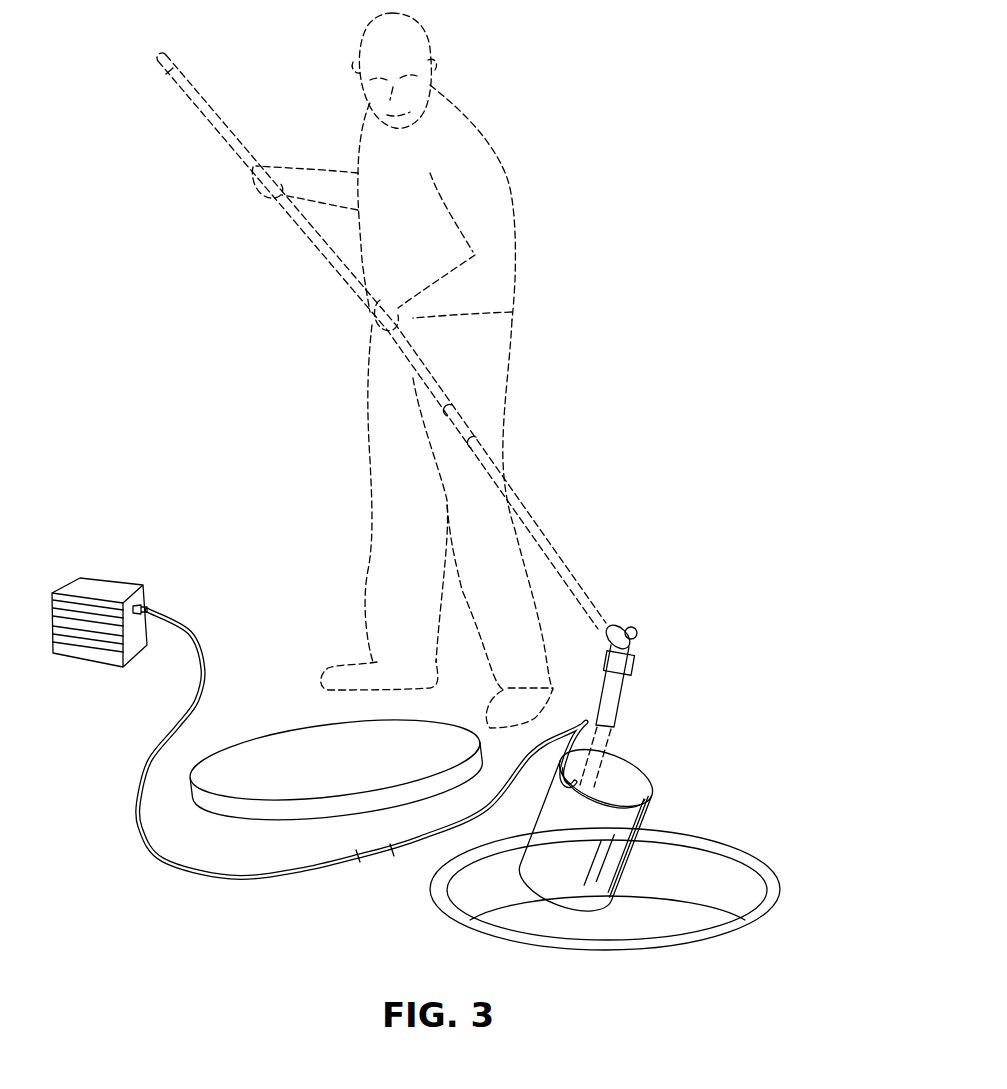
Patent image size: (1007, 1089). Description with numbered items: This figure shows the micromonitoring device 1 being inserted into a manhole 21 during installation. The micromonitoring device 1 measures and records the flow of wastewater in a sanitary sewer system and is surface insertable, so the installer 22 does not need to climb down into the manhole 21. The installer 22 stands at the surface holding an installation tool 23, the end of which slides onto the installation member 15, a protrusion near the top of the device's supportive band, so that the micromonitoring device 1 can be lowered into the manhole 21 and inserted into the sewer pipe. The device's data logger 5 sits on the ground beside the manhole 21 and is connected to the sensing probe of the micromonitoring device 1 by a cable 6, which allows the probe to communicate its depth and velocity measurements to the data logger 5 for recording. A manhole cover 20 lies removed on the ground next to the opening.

The micromonitoring device 1 is at (663, 750).
The data logger 5 is at (103, 587).
The cable 6 is at (147, 773).
The installation member 15 is at (597, 725).
The skimmer lid 20 is at (287, 750).
The manhole 21 is at (680, 903).
The installer 22 is at (512, 192).
The installation tool 23 is at (525, 497).